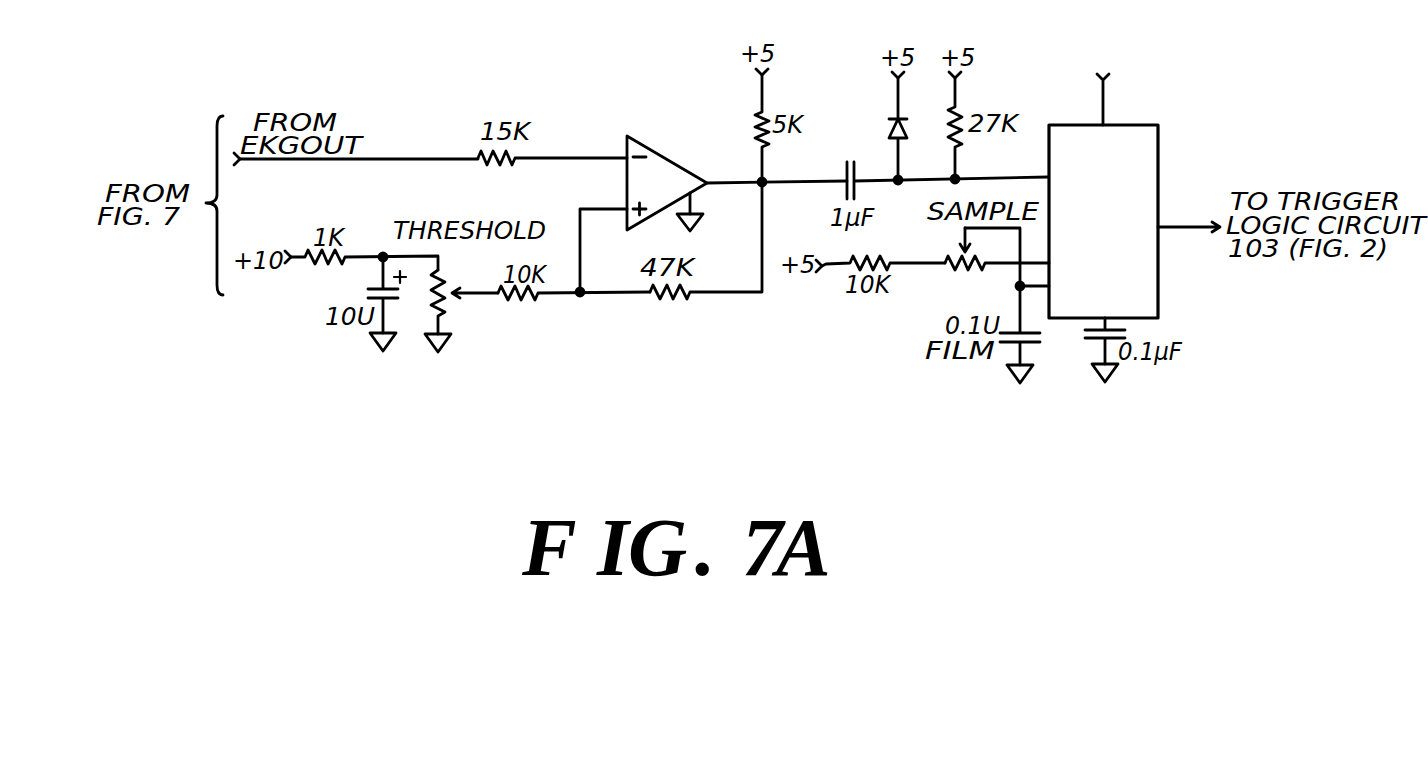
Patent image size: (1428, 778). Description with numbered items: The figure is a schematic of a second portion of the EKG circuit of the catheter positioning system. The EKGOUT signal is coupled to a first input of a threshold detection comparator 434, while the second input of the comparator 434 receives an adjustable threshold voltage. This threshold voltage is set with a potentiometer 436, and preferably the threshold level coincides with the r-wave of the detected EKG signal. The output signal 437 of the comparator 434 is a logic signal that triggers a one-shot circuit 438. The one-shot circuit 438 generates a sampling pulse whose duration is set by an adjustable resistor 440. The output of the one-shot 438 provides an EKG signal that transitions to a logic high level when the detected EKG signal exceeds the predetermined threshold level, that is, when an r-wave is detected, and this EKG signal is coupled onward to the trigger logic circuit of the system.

The threshold detection comparator 434 is at (680, 135).
The potentiometer 436 is at (448, 311).
The output signal 437 is at (790, 177).
The one-shot circuit 438 is at (1118, 125).
The adjustable resistor 440 is at (952, 276).